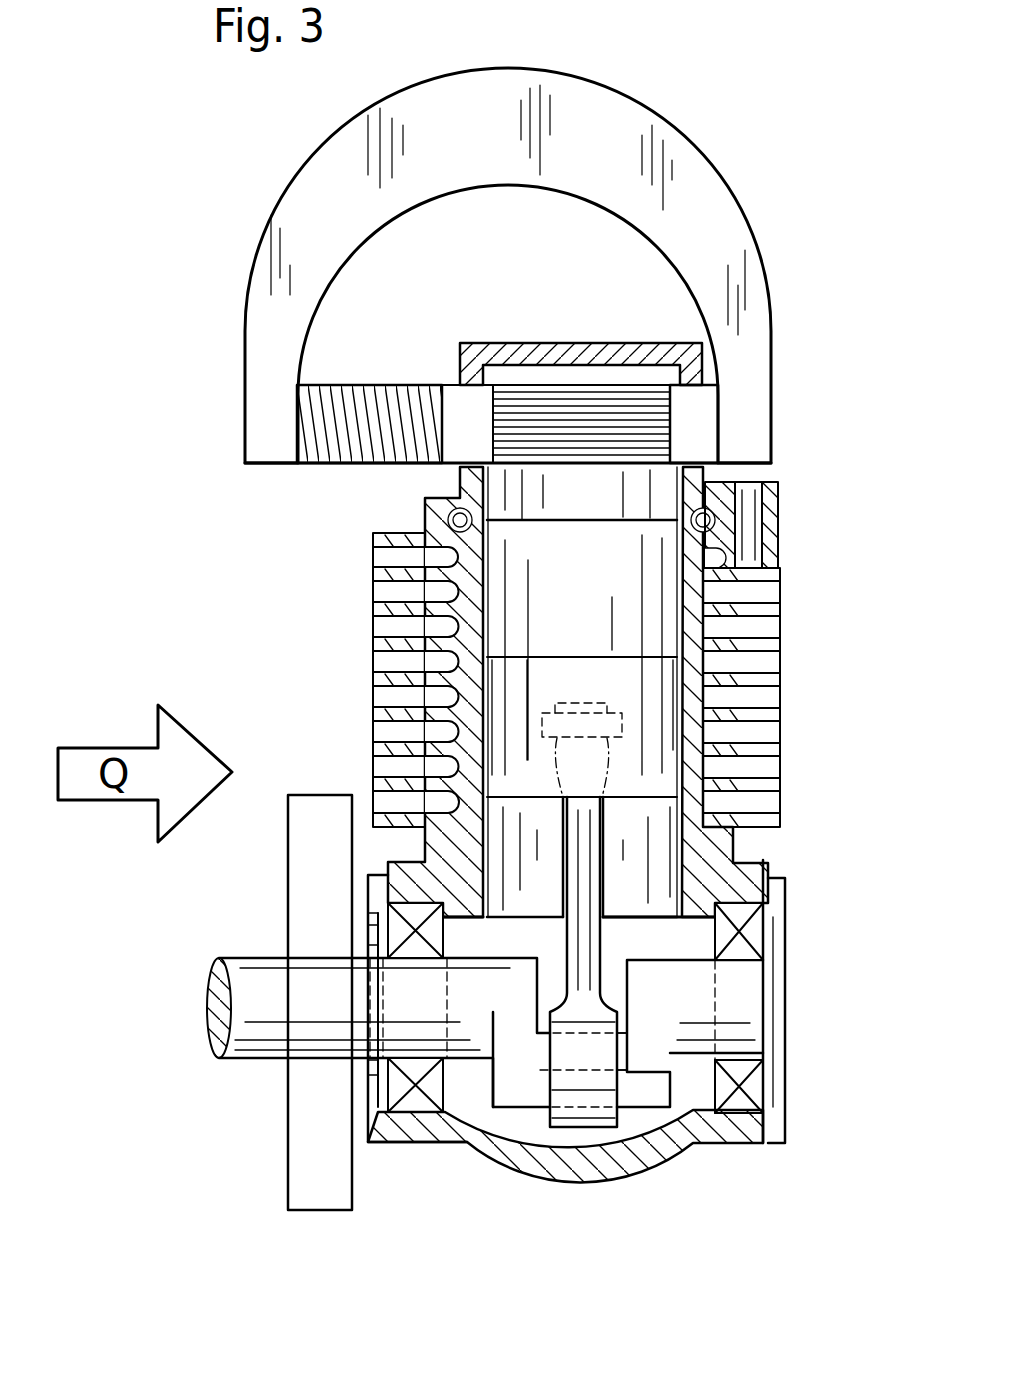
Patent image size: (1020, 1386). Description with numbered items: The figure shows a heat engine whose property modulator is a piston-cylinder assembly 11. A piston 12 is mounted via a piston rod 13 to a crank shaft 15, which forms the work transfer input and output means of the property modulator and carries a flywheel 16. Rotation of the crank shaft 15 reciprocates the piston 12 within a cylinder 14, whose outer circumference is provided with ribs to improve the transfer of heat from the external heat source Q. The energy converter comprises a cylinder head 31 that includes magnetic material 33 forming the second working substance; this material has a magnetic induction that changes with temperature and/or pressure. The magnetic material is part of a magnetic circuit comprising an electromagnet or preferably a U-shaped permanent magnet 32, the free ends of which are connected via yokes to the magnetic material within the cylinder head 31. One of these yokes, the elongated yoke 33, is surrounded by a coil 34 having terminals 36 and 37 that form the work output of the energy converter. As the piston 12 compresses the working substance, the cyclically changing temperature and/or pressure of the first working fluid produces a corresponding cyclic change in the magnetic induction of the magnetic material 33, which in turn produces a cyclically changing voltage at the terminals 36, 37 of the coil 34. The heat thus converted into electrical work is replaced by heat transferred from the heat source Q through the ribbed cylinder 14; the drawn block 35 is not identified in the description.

The piston-cylinder assembly 11 is at (639, 692).
The piston 12 is at (647, 782).
The piston rod 13 is at (575, 862).
The cylinder 14 is at (377, 712).
The crank shaft 15 is at (242, 1042).
The flywheel 16 is at (312, 1210).
The cylinder head 31 is at (703, 348).
The permanent magnet 32 is at (598, 110).
The magnetic material 33 is at (598, 437).
The coil 34 is at (352, 385).
The pole piece 35 is at (702, 425).
The terminal 36 is at (423, 405).
The terminal 37 is at (418, 463).